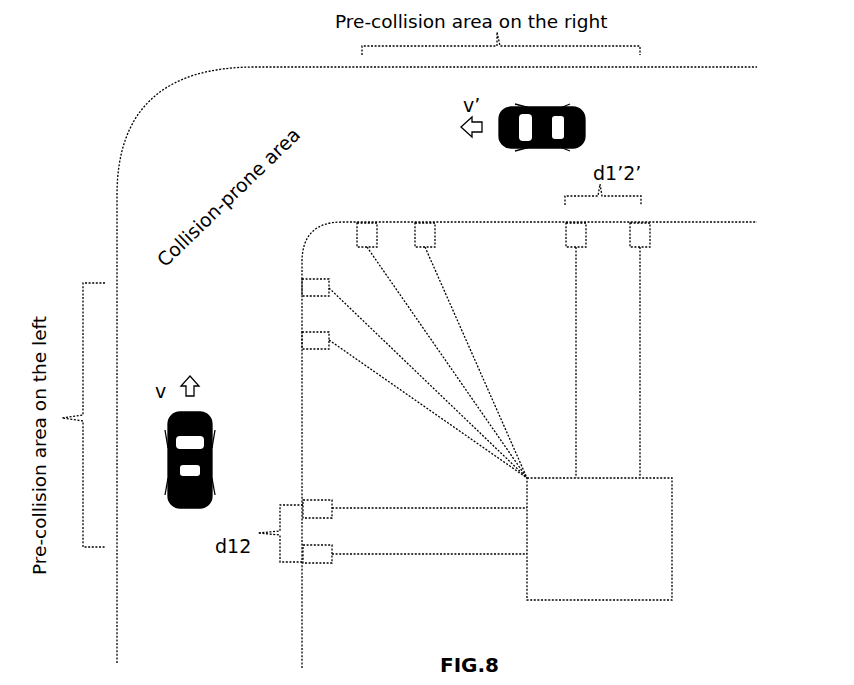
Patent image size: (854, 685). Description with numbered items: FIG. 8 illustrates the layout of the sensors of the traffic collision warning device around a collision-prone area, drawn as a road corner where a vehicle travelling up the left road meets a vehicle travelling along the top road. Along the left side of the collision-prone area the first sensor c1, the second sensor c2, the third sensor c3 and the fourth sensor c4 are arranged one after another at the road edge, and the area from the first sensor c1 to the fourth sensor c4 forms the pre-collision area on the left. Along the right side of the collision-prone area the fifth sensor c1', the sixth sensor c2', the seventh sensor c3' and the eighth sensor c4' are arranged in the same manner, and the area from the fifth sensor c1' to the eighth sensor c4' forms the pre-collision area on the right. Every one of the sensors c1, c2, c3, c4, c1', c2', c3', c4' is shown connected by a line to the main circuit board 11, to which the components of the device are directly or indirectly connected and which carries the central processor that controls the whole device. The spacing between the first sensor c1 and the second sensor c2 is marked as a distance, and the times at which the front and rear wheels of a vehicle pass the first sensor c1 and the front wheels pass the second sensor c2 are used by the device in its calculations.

The main circuit board 11 is at (599, 539).
The first sensor c1 is at (328, 569).
The second sensor c2 is at (328, 522).
The third sensor c3 is at (300, 349).
The fourth sensor c4 is at (300, 292).
The fifth sensor c1' is at (653, 253).
The sixth sensor c2' is at (560, 253).
The seventh sensor c3' is at (431, 223).
The eighth sensor c4' is at (361, 223).